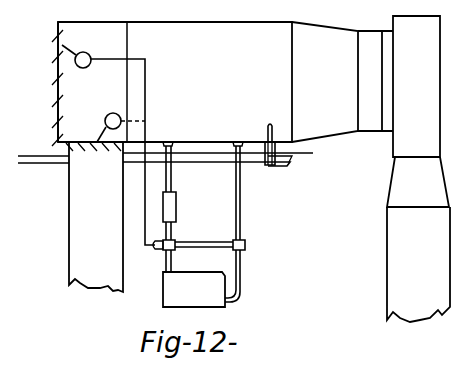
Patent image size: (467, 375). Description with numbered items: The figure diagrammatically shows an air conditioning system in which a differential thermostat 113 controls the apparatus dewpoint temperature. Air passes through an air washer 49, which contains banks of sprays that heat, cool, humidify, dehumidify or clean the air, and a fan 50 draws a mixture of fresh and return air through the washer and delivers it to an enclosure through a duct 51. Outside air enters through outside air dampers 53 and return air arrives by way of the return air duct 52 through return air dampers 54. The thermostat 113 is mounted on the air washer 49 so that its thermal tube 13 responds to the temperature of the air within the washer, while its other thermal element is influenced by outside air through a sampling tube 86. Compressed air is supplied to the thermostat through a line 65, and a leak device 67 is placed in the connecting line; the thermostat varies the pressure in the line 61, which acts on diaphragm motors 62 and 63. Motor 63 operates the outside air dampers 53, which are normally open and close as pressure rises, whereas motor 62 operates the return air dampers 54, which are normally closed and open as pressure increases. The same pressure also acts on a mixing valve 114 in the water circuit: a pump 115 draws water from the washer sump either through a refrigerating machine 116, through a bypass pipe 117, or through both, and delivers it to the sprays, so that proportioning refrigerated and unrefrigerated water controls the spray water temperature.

The air washer 49 is at (225, 82).
The fan 50 is at (418, 111).
The duct 51 is at (418, 264).
The return air duct 52 is at (96, 217).
The outside air dampers 53 is at (57, 82).
The return air dampers 54 is at (97, 144).
The line 61 is at (147, 111).
The diaphragm motor 62 is at (114, 113).
The diaphragm motor 63 is at (97, 47).
The line 65 is at (308, 153).
The leak device 67 is at (255, 143).
The sampling tube 86 is at (37, 164).
The thermal tube 13 is at (267, 130).
The differential thermostat 113 is at (271, 166).
The mixing valve 114 is at (178, 242).
The pump 115 is at (178, 200).
The refrigerating machine 116 is at (194, 289).
The bypass pipe 117 is at (227, 249).